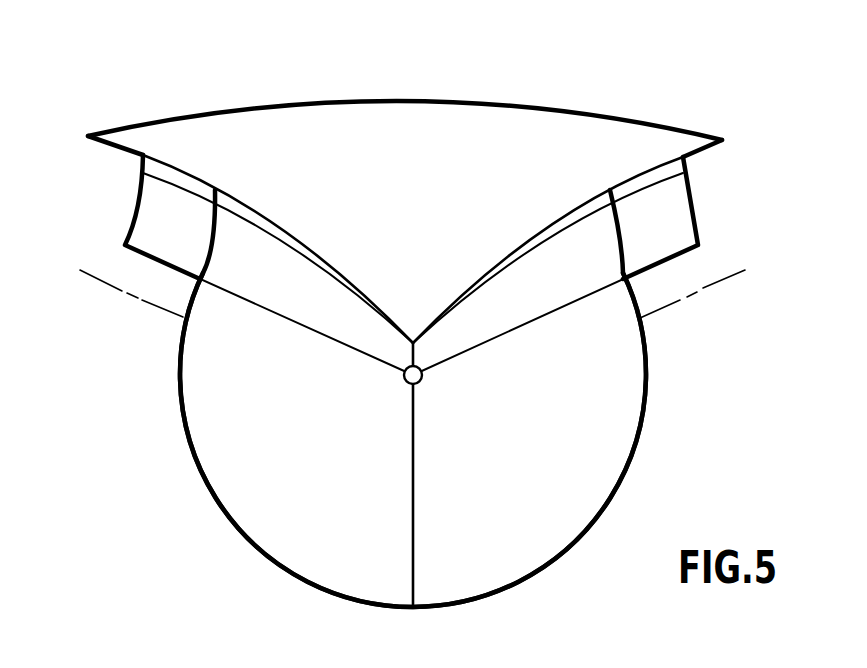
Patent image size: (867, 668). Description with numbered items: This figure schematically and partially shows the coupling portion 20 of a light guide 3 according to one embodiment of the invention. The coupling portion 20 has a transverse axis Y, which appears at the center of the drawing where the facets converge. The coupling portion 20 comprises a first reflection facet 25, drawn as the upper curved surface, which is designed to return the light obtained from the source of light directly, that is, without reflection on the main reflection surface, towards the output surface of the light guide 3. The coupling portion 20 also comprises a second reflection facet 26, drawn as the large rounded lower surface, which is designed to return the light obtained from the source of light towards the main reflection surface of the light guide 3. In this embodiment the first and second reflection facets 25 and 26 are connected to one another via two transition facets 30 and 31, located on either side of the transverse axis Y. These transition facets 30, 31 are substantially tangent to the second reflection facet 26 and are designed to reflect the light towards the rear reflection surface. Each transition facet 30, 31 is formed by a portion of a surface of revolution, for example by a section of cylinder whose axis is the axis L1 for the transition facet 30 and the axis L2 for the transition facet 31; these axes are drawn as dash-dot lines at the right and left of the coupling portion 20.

The light guide 3 is at (413, 316).
The coupling portion 20 is at (405, 312).
The first reflection facet 25 is at (487, 137).
The second reflection facet 26 is at (503, 537).
The transition facet 30 is at (520, 298).
The transition facet 31 is at (300, 300).
The transverse axis Y is at (416, 371).
The axis of transition facet L1 is at (745, 282).
The axis of transition facet L2 is at (102, 285).